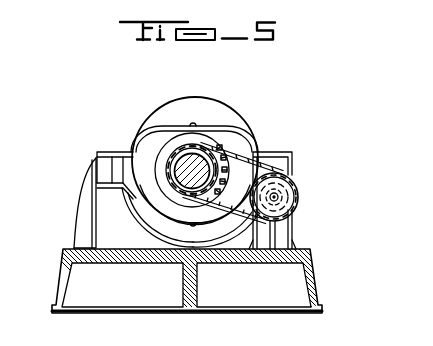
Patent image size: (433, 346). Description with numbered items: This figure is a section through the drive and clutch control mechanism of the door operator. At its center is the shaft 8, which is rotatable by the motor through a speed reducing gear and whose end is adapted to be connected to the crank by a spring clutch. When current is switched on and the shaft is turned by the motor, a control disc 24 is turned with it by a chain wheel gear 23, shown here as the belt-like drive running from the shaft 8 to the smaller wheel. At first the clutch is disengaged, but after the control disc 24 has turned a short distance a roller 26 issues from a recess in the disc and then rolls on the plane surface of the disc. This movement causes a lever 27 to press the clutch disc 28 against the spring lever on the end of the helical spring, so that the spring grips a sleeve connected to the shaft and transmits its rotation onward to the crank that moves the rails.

The shaft 8 is at (187, 168).
The chain wheel gear 23 is at (270, 168).
The control disc 24 is at (305, 197).
The roller 26 is at (300, 155).
The lever 27 is at (163, 128).
The clutch disc 28 is at (215, 113).